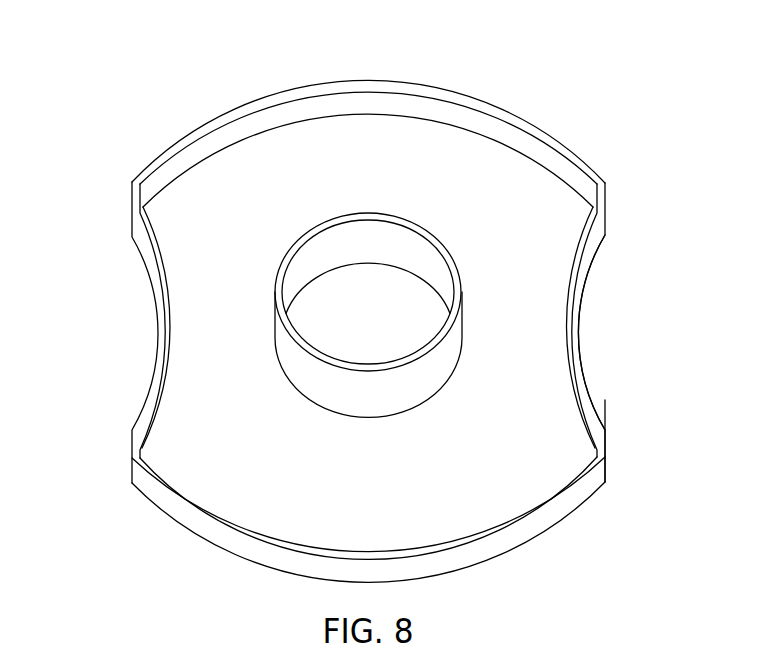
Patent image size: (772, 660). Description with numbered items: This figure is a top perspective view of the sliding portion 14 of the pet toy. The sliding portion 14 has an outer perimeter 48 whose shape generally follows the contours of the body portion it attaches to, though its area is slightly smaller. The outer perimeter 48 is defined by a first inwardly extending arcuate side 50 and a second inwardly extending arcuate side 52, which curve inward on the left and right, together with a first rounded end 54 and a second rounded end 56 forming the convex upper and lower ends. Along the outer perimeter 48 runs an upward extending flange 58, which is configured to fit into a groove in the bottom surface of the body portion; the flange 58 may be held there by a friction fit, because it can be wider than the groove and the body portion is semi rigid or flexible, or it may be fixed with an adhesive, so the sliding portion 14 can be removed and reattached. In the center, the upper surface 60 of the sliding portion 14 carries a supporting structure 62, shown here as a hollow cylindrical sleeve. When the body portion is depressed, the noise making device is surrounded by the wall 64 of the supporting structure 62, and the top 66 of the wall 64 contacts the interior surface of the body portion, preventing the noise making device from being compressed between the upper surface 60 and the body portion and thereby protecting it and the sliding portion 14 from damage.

The sliding portion 14 is at (607, 203).
The outer perimeter 48 is at (597, 410).
The first inwardly extending arcuate side 50 is at (580, 333).
The second inwardly extending arcuate side 52 is at (157, 315).
The first rounded end 54 is at (537, 130).
The second rounded end 56 is at (562, 522).
The upward extending flange 58 is at (225, 125).
The upper surface 60 is at (245, 462).
The supporting structure 62 is at (285, 255).
The wall 64 is at (398, 397).
The top 66 is at (440, 240).